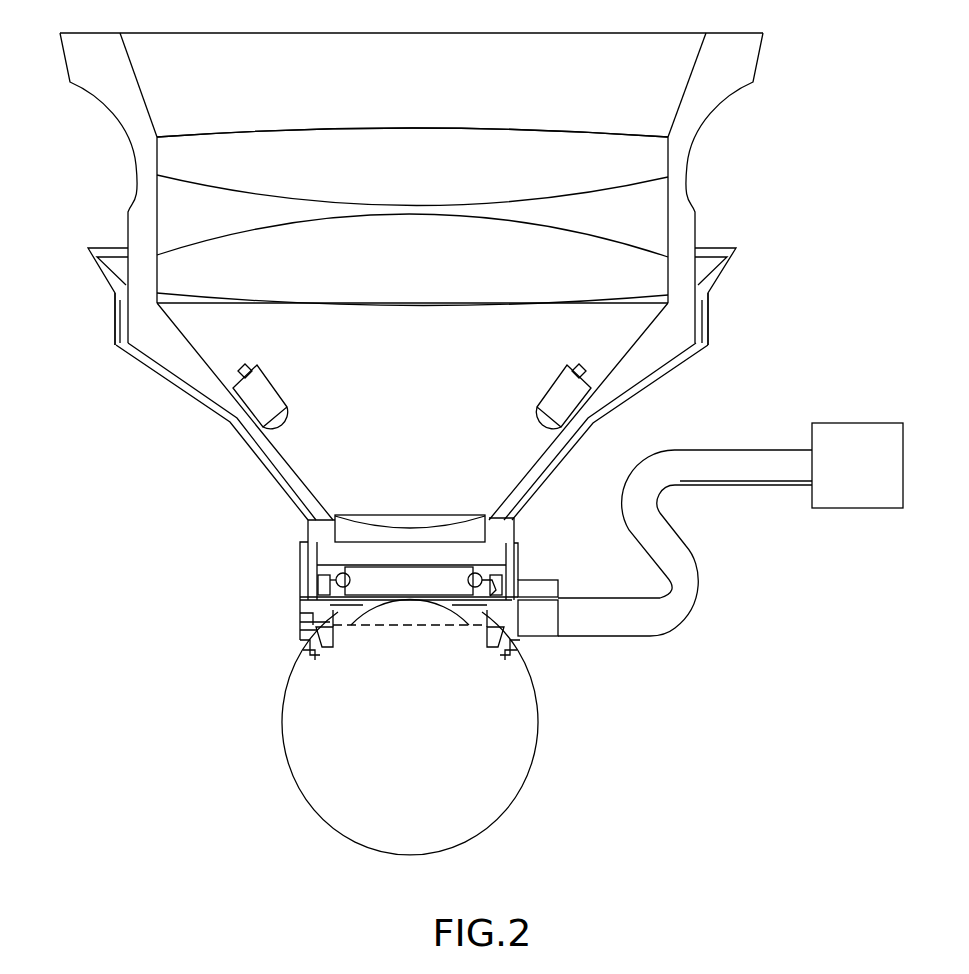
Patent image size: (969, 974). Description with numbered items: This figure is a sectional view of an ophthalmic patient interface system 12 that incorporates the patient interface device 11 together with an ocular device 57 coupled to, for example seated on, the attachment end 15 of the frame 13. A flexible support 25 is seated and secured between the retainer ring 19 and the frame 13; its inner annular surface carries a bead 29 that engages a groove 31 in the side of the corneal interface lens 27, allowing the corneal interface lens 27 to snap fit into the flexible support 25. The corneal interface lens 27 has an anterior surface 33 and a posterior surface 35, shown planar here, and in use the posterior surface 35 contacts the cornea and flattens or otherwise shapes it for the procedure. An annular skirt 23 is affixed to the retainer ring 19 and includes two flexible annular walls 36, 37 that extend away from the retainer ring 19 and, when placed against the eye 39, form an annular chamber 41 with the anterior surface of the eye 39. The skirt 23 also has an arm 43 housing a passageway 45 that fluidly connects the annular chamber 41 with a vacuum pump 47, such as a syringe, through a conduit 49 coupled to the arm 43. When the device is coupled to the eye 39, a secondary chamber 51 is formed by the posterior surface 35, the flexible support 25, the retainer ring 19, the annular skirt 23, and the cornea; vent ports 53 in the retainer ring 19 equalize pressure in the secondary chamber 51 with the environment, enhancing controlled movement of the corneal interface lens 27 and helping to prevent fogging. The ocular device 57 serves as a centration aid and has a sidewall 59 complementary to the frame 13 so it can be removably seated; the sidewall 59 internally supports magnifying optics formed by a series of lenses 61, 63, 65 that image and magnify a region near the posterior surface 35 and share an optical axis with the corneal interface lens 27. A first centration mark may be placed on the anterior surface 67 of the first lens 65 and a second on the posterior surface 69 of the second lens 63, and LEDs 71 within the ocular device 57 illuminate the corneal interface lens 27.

The patient interface device 11 is at (708, 318).
The ophthalmic patient interface system 12 is at (152, 500).
The frame 13 is at (306, 524).
The attachment end 15 is at (722, 242).
The retainer ring 19 is at (305, 593).
The annular skirt 23 is at (303, 642).
The flexible support 25 is at (502, 575).
The corneal interface lens 27 is at (474, 572).
The bead 29 is at (318, 562).
The groove 31 is at (343, 573).
The anterior surface 33 is at (418, 565).
The posterior surface 35 is at (463, 612).
The annular wall 36 is at (303, 656).
The annular wall 37 is at (333, 623).
The eye 39 is at (530, 673).
The annular chamber 41 is at (328, 653).
The arm 43 is at (558, 585).
The passageway 45 is at (550, 618).
The vacuum pump 47 is at (850, 509).
The conduit 49 is at (747, 486).
The secondary chamber 51 is at (357, 612).
The vent ports 53 is at (303, 622).
The ocular device 57 is at (695, 158).
The sidewall 59 is at (137, 218).
The lens 61 is at (470, 530).
The second lens 63 is at (530, 292).
The first lens 65 is at (567, 142).
The anterior surface 67 is at (480, 127).
The posterior surface 69 is at (462, 318).
The LEDs 71 is at (275, 388).